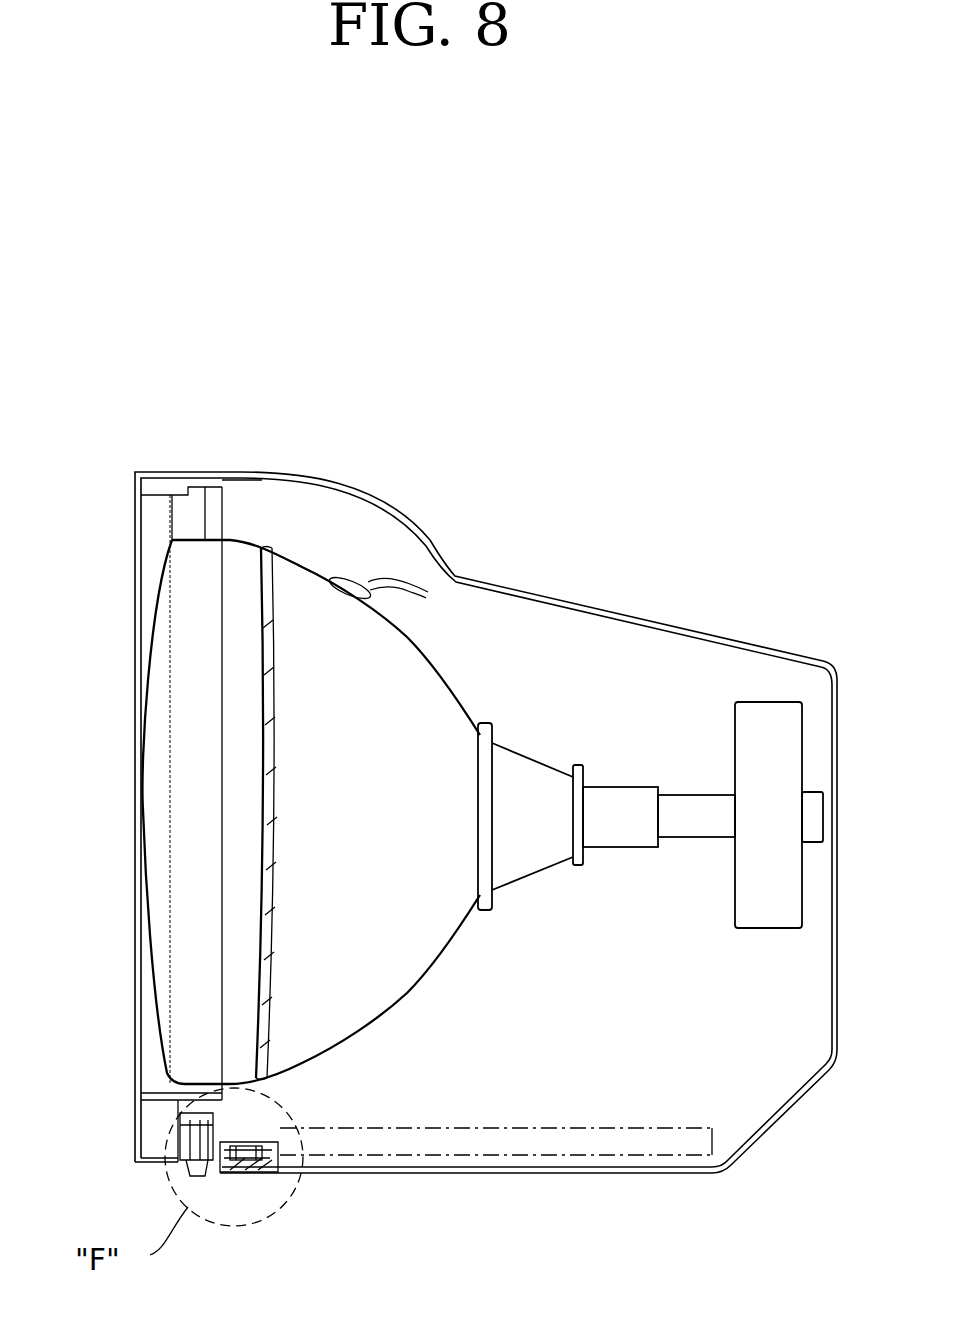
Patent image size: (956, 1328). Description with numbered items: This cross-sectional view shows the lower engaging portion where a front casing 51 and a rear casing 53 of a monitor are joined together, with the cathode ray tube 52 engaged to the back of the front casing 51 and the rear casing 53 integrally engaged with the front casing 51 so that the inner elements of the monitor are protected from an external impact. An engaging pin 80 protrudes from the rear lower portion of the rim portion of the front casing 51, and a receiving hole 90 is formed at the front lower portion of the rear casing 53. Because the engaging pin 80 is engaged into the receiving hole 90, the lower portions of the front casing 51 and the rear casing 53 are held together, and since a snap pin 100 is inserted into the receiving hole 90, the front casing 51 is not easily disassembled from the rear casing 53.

The front casing 51 is at (173, 472).
The cathode ray tube 52 is at (302, 582).
The rear casing 53 is at (542, 590).
The engaging pin 80 is at (300, 1183).
The receiving hole 90 is at (232, 1173).
The snap pin 100 is at (178, 1122).